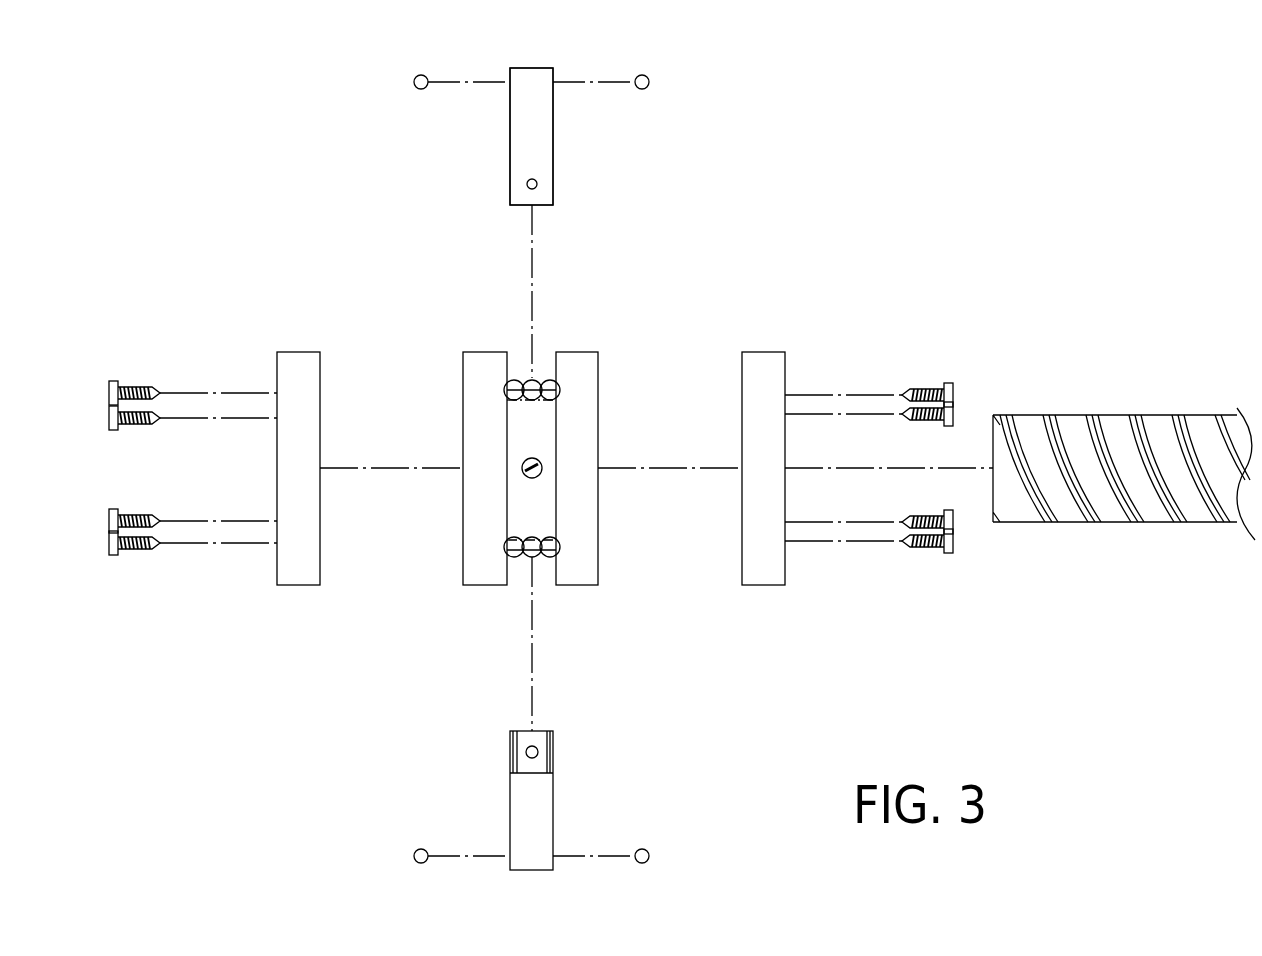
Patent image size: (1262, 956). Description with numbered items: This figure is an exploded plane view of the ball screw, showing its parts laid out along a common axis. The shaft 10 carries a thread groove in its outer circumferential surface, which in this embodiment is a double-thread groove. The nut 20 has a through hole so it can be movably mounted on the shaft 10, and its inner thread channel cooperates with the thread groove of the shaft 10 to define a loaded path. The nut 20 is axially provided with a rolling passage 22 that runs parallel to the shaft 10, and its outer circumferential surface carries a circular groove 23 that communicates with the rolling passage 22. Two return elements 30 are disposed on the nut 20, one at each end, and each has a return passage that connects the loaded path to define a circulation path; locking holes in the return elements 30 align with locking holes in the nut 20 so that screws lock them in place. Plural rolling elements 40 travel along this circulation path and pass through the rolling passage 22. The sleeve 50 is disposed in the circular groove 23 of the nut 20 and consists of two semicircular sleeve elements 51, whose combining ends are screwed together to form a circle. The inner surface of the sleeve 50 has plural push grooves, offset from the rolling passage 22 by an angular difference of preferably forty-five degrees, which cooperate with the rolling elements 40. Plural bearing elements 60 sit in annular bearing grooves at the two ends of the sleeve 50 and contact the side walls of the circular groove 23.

The shaft 10 is at (1116, 426).
The nut 20 is at (597, 530).
The rolling passage 22 is at (522, 398).
The circular groove 23 is at (517, 572).
The return element 30 is at (302, 358).
The rolling element 40 is at (527, 378).
The sleeve 50 is at (547, 133).
The semicircular sleeve element 51 is at (540, 72).
The bearing element 60 is at (416, 77).